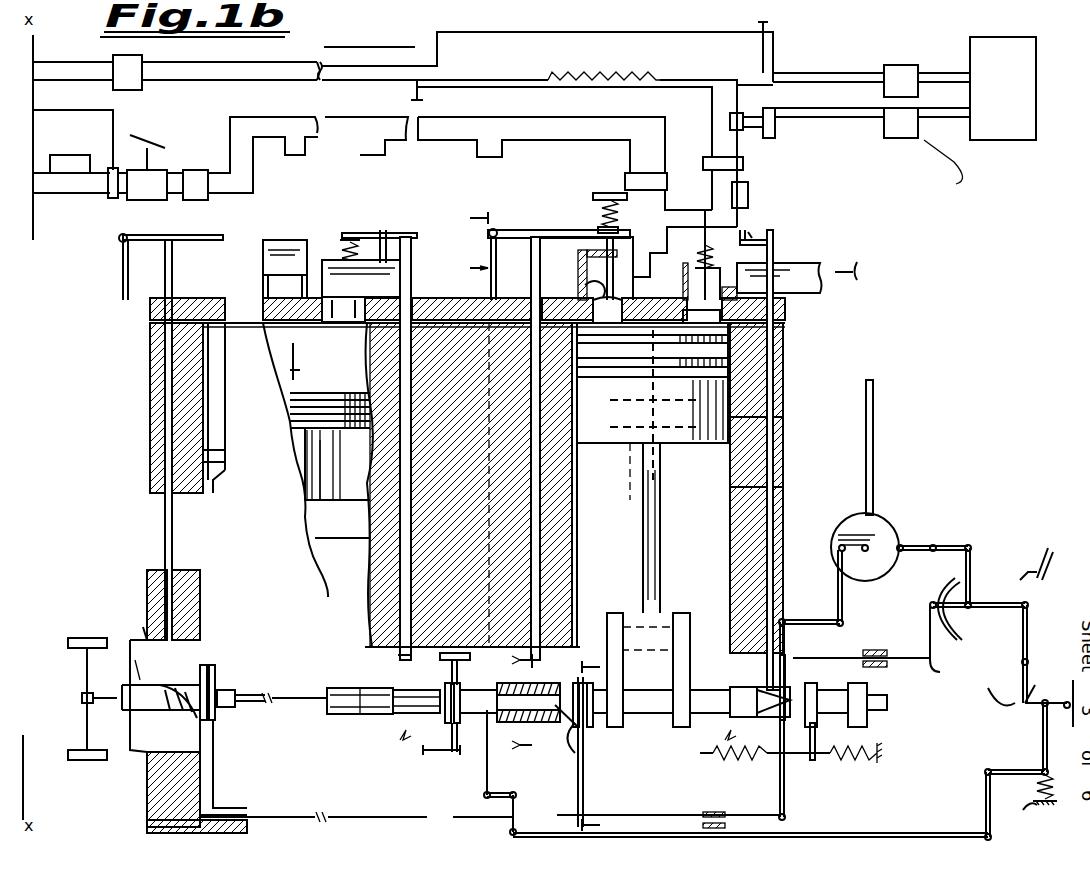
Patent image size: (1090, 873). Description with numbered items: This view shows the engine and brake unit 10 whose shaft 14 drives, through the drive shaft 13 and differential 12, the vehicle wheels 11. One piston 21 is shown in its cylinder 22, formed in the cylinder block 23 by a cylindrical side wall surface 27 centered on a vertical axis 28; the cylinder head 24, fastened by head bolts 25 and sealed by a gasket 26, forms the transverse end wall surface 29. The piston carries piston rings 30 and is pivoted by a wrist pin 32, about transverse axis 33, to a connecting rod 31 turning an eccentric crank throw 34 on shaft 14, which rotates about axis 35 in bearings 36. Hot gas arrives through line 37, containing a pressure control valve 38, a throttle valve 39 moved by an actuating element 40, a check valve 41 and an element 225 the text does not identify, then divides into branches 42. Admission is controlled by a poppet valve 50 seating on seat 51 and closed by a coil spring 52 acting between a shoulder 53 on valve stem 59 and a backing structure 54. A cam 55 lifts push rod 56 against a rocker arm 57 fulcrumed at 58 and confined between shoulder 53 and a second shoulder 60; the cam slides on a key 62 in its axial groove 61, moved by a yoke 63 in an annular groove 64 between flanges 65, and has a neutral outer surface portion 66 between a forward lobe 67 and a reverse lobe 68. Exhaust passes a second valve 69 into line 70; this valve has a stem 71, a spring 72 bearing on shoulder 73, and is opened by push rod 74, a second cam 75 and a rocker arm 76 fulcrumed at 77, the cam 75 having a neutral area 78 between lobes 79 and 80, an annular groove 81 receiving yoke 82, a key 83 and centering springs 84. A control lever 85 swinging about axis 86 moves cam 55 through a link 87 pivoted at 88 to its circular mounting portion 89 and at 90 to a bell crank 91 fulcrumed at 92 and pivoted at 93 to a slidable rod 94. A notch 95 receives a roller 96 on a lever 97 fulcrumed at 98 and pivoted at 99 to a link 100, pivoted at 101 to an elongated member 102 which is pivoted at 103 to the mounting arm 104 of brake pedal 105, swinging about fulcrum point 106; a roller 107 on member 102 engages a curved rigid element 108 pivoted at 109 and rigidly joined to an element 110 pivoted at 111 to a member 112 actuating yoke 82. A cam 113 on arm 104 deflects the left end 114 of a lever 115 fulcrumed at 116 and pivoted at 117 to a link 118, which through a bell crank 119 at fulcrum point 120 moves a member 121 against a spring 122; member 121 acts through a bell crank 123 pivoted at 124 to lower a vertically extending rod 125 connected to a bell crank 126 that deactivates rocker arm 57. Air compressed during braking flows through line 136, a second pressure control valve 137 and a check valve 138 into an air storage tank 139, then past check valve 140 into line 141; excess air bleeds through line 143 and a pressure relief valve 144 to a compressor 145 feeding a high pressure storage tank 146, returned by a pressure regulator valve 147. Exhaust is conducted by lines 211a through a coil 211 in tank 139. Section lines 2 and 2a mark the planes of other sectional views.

The engine and brake unit 10 is at (125, 465).
The driven wheels 11 is at (97, 640).
The differential 12 is at (80, 688).
The drive shaft 13 is at (100, 710).
The shaft 14 is at (108, 678).
The pistons 21 is at (214, 480).
The cylinders 22 is at (205, 445).
The cylinder block 23 is at (150, 430).
The cylinder head structure 24 is at (150, 322).
The head bolts 25 is at (193, 286).
The gasket 26 is at (150, 343).
The cylindrical side wall surfaces 27 is at (783, 487).
The axes 28 is at (300, 376).
The transverse end wall surface 29 is at (308, 324).
The piston rings 30 is at (318, 440).
The connecting rod 31 is at (662, 548).
The wrist pin 32 is at (615, 472).
The transverse axis 33 is at (783, 417).
The eccentric crank throw 34 is at (665, 613).
The axis 35 is at (302, 698).
The bearings 36 is at (870, 725).
The line 37 is at (58, 195).
The pressure control valve 38 is at (75, 157).
The throttle valve 39 is at (138, 200).
The actuating element 40 is at (160, 146).
The check valve 41 is at (194, 200).
The branches 42 is at (340, 170).
The poppet valve 50 is at (612, 328).
The seat 51 is at (586, 295).
The coil spring 52 is at (600, 214).
The shoulder 53 is at (598, 232).
The backing structure 54 is at (595, 198).
The cam 55 is at (150, 735).
The push rod 56 is at (165, 388).
The rocker arm 57 is at (536, 232).
The fulcrum 58 is at (488, 240).
The valve stem 59 is at (607, 276).
The second shoulder 60 is at (578, 254).
The axial groove 61 is at (545, 688).
The key 62 is at (556, 748).
The yoke 63 is at (583, 775).
The annular groove 64 is at (593, 685).
The flanges 65 is at (580, 745).
The outer surface portion 66 is at (175, 688).
The lobe 67 is at (215, 688).
The lobe 68 is at (140, 640).
The second valve 69 is at (700, 323).
The line 70 is at (805, 268).
The stem 71 is at (708, 270).
The spring 72 is at (688, 263).
The shoulder 73 is at (705, 244).
The push rod 74 is at (773, 468).
The second cam 75 is at (550, 743).
The rocker arm 76 is at (770, 240).
The fulcrum 77 is at (760, 228).
The neutral area 78 is at (748, 690).
The lobe 79 is at (430, 690).
The lobe 80 is at (380, 715).
The annular groove 81 is at (447, 723).
The yoke 82 is at (452, 752).
The key 83 is at (785, 690).
The springs 84 is at (745, 760).
The control lever 85 is at (873, 415).
The axis 86 is at (868, 545).
The link 87 is at (838, 590).
The pivot 88 is at (838, 552).
The circular mounting portion 89 is at (840, 545).
The pivot 90 is at (840, 635).
The bell crank 91 is at (838, 628).
The fulcrum location 92 is at (784, 628).
The pivot 93 is at (786, 815).
The slidable rod 94 is at (698, 815).
The notch 95 is at (903, 547).
The roller 96 is at (935, 548).
The lever 97 is at (970, 547).
The fulcrum point 98 is at (933, 552).
The pivot 99 is at (972, 548).
The link 100 is at (972, 595).
The pivot 101 is at (972, 605).
The elongated member 102 is at (995, 608).
The pivot 103 is at (1028, 606).
The mounting arm 104 is at (1027, 635).
The brake pedal 105 is at (1051, 560).
The fulcrum point 106 is at (1028, 662).
The roller 107 is at (960, 640).
The curved rigid element 108 is at (950, 590).
The fulcrum point 109 is at (928, 605).
The element 110 is at (930, 640).
The pivot 111 is at (940, 672).
The member 112 is at (889, 662).
The cam 113 is at (988, 700).
The left end 114 is at (1049, 697).
The lever 115 is at (1040, 720).
The fulcrum point 116 is at (1069, 755).
The pivot 117 is at (1040, 740).
The link 118 is at (1045, 778).
The bell crank 119 is at (985, 772).
The fulcrum point 120 is at (985, 778).
The member 121 is at (972, 825).
The spring 122 is at (1036, 808).
The bell crank 123 is at (510, 833).
The pivot 124 is at (516, 795).
The vertically extending rod 125 is at (123, 295).
The bell crank 126 is at (490, 254).
The line 136 is at (665, 237).
The second pressure control valve 137 is at (749, 195).
The check valve 138 is at (748, 163).
The air storage tank 139 is at (780, 64).
The check valve 140 is at (140, 58).
The line 141 is at (99, 42).
The line 143 is at (735, 122).
The pressure relief valve 144 is at (777, 136).
The compressor 145 is at (905, 140).
The high pressure storage tank 146 is at (1012, 140).
The pressure regulator valve 147 is at (906, 75).
The coil 211 is at (620, 30).
The lines 211a is at (872, 257).
The coupling 225 is at (110, 200).
The section line 2 is at (601, 732).
The section line 2a is at (513, 696).